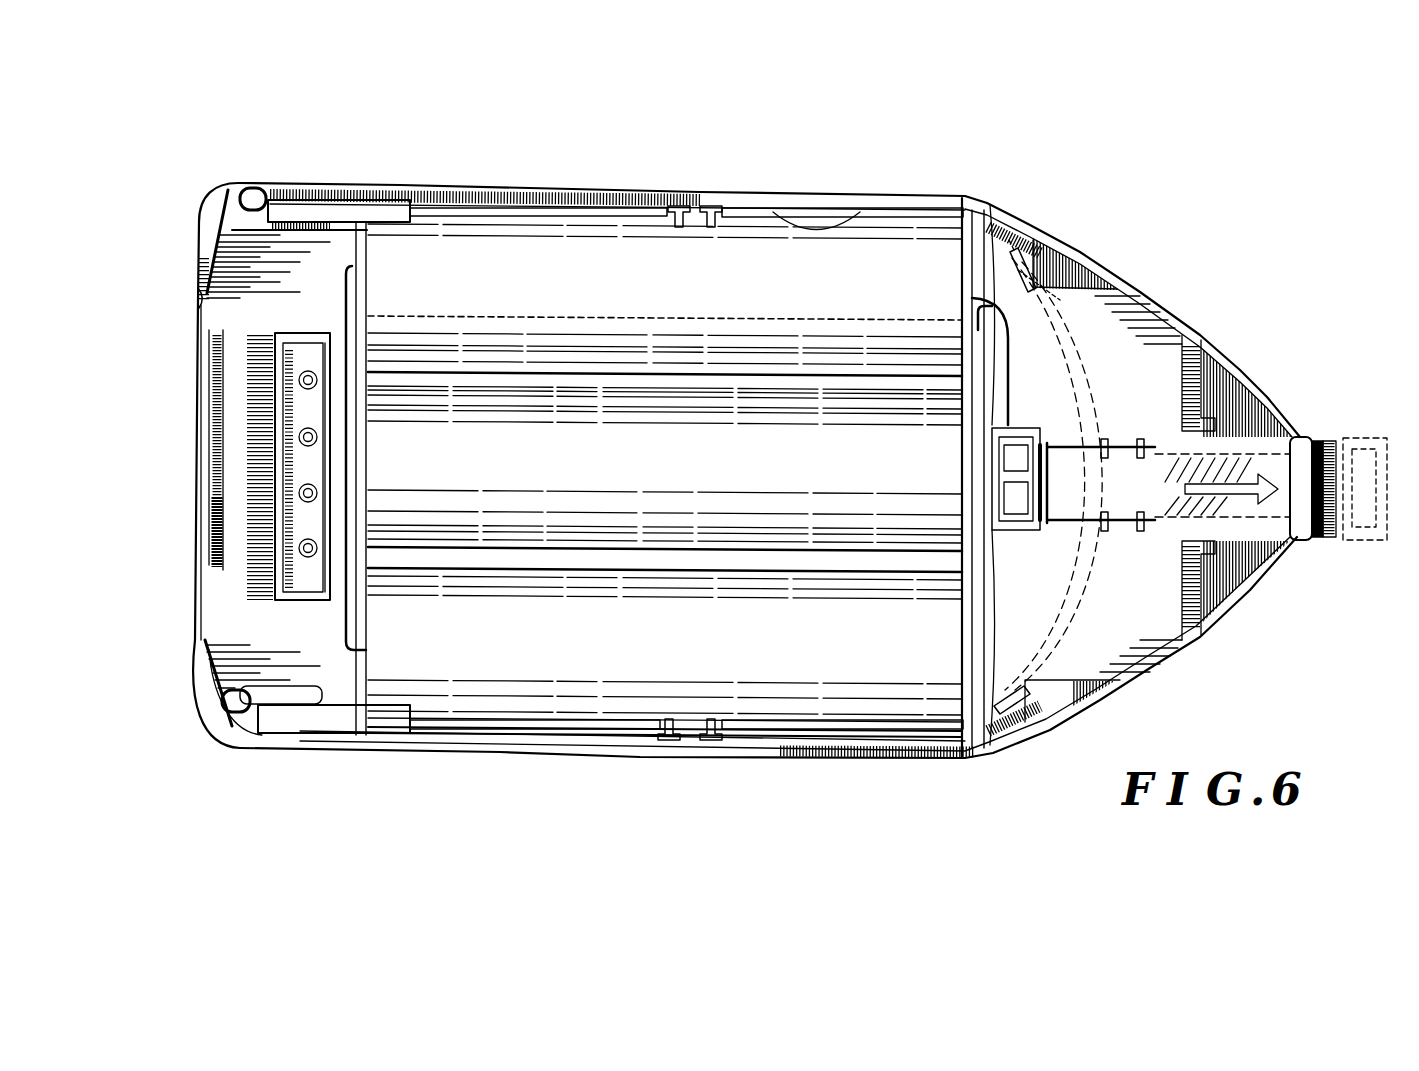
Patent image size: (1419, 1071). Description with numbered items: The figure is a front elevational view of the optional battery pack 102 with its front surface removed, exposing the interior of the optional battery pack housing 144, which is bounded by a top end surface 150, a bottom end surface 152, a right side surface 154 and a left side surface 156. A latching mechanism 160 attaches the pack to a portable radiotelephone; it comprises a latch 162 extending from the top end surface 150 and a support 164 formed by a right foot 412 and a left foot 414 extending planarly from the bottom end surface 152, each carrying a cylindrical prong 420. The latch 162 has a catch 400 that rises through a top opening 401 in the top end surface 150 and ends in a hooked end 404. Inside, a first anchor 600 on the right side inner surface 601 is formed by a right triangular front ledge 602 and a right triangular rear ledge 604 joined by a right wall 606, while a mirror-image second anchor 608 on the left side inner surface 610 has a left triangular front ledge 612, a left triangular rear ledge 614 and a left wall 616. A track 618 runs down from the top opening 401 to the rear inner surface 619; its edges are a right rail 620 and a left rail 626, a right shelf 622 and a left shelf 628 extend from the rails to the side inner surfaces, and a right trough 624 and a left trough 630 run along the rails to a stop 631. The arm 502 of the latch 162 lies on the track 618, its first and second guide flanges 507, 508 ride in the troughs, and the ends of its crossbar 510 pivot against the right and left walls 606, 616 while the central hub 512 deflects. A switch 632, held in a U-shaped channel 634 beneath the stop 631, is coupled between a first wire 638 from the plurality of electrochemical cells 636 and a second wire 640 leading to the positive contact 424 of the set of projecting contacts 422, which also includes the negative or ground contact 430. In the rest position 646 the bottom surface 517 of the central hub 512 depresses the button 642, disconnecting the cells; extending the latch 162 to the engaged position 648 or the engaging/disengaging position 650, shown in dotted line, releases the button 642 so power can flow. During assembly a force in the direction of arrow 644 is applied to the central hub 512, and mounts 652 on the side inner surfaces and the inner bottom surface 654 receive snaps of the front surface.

The optional battery pack 102 is at (1235, 257).
The optional battery pack housing 144 is at (993, 762).
The top end surface 150 is at (1298, 437).
The bottom end surface 152 is at (193, 440).
The right side surface 154 is at (596, 752).
The left side surface 156 is at (740, 192).
The latching mechanism 160 is at (201, 176).
The latch 162 is at (1379, 580).
The support 164 is at (191, 225).
The catch 400 is at (1319, 440).
The top opening 401 is at (1300, 541).
The hooked end 404 is at (1323, 438).
The right foot 412 is at (204, 740).
The left foot 414 is at (229, 185).
The cylindrical prong 420 is at (254, 200).
The set of projecting contacts 422 is at (316, 581).
The positive contact 424 is at (228, 473).
The negative or ground contact 430 is at (300, 548).
The arm 502 is at (1223, 572).
The first guide flange 507 is at (1125, 529).
The second guide flange 508 is at (1104, 440).
The crossbar 510 is at (1026, 584).
The central hub 512 is at (1029, 507).
The bottom surface 517 is at (1045, 460).
The first anchor 600 is at (1074, 664).
The right side inner surface 601 is at (1082, 668).
The right triangular front ledge 602 is at (1037, 700).
The right triangular rear ledge 604 is at (985, 768).
The right wall 606 is at (1002, 725).
The second anchor 608 is at (1064, 296).
The left side inner surface 610 is at (860, 207).
The left triangular front ledge 612 is at (1033, 258).
The left triangular rear ledge 614 is at (985, 205).
The left wall 616 is at (1012, 250).
The track 618 is at (1180, 396).
The rear inner surface 619 is at (1180, 603).
The right rail 620 is at (1107, 527).
The right shelf 622 is at (1230, 585).
The right trough 624 is at (1178, 542).
The left rail 626 is at (1057, 352).
The left shelf 628 is at (1221, 384).
The left trough 630 is at (1155, 440).
The stop 631 is at (1100, 446).
The switch 632 is at (1003, 513).
The U-shaped channel 634 is at (992, 487).
The plurality of electrochemical cells 636 is at (557, 247).
The first wire 638 is at (985, 318).
The second wire 640 is at (346, 330).
The button 642 is at (1037, 473).
The arrow 644 is at (1258, 478).
The rest position 646 is at (1040, 612).
The engaged position 648 is at (1047, 623).
The engaging/disengaging position 650 is at (1033, 645).
The mounts 652 is at (301, 244).
The inner bottom surface 654 is at (228, 350).